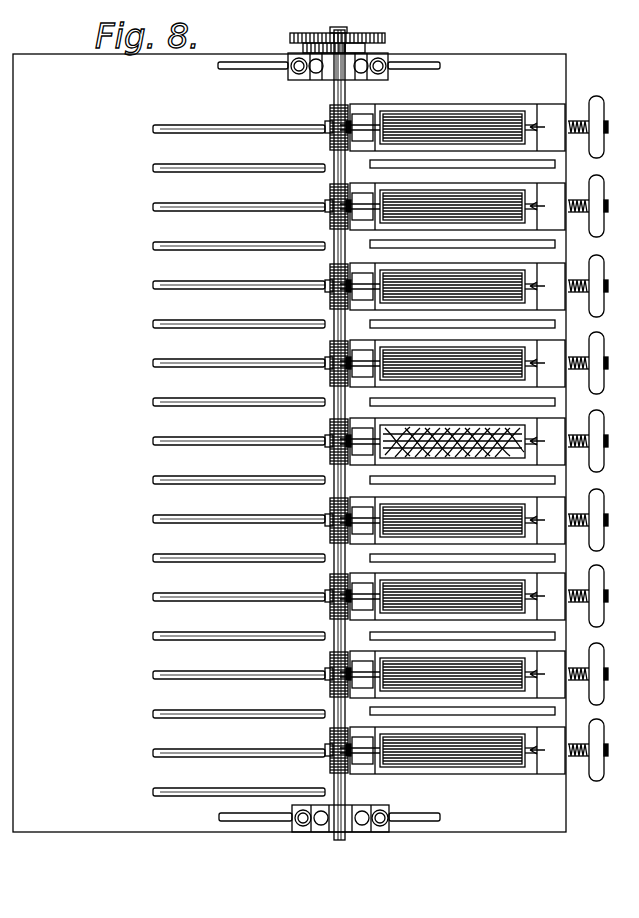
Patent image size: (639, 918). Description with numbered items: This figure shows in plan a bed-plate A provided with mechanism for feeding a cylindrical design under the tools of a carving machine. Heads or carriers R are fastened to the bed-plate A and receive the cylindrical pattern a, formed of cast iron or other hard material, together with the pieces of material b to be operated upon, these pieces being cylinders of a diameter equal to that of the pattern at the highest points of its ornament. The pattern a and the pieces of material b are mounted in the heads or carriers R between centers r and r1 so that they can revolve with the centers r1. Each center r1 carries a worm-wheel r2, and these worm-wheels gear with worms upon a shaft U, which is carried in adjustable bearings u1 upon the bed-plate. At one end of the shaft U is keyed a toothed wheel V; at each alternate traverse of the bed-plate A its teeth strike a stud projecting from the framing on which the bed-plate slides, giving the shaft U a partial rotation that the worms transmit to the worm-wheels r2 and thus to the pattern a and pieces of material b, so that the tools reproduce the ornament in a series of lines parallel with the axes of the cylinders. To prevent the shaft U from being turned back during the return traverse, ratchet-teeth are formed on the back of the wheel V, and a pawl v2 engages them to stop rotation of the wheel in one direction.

The bed-plate A is at (289, 443).
The shaft U is at (332, 328).
The toothed wheel V is at (345, 38).
The pawl v2 is at (303, 47).
The adjustable bearings u1 is at (389, 806).
The heads or carriers R is at (448, 152).
The center r is at (569, 438).
The center r1 is at (372, 150).
The worm-wheel r2 is at (330, 136).
The piece of material b is at (452, 439).
The cylindrical pattern a is at (452, 426).